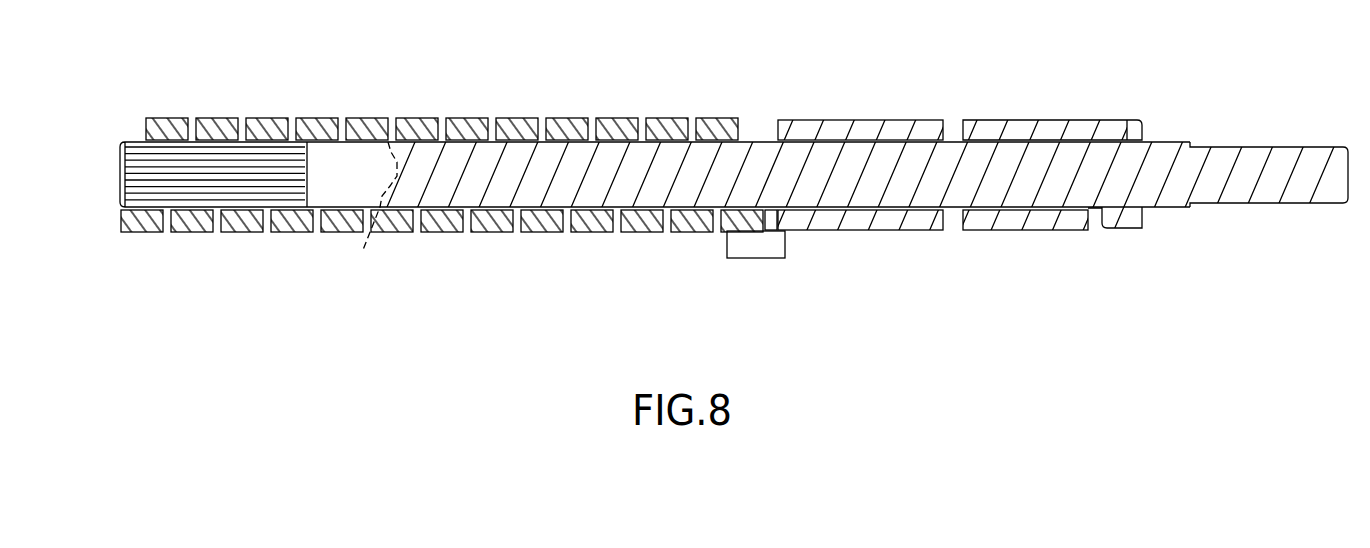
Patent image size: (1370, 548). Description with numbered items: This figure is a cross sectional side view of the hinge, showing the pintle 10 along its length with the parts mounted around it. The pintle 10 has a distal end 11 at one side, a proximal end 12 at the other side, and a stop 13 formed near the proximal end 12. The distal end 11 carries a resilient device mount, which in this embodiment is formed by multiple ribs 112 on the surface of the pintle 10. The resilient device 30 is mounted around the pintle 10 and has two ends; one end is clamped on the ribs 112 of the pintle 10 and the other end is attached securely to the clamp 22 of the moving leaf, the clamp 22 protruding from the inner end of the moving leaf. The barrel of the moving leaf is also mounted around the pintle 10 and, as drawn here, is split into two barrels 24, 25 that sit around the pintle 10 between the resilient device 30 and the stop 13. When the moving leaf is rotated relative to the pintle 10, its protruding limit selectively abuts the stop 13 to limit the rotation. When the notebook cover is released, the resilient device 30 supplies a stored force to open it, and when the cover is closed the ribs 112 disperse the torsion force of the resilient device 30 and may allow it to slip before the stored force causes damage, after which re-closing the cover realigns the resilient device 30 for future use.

The pintle 10 is at (857, 200).
The distal end 11 is at (118, 178).
The ribs 112 is at (207, 150).
The proximal end 12 is at (1222, 157).
The stop 13 is at (1123, 222).
The clamp 22 is at (742, 250).
The barrel 24 is at (810, 122).
The barrel 25 is at (1028, 130).
The resilient device 30 is at (327, 120).